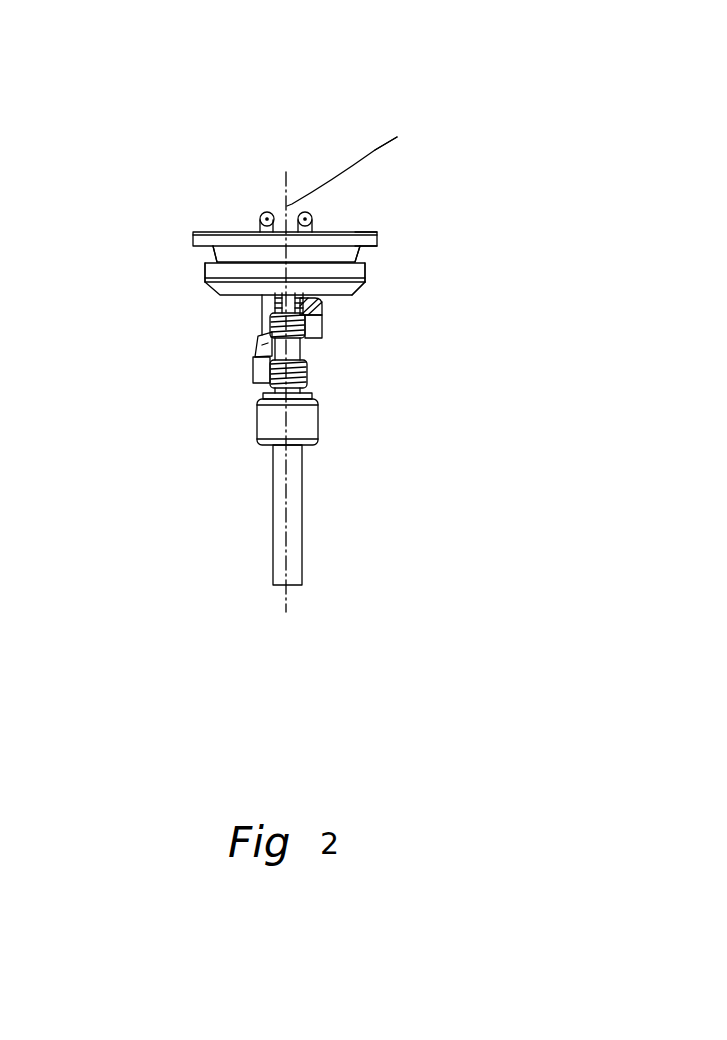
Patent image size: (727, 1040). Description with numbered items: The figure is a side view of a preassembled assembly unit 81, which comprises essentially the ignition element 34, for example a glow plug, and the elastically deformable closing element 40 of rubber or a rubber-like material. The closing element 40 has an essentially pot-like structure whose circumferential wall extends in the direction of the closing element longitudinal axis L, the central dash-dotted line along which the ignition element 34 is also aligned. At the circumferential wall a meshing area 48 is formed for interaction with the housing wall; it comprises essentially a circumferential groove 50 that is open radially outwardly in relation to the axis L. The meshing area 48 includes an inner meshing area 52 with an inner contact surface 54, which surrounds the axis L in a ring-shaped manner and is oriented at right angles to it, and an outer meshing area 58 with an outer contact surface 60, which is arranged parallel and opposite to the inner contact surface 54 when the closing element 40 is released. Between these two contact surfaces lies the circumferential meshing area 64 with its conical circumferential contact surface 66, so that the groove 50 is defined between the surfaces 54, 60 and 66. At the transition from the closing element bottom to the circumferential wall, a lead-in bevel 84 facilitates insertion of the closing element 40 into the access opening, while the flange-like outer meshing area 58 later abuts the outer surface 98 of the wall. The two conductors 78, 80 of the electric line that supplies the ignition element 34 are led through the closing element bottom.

The ignition element 34 is at (318, 432).
The closing element 40 is at (222, 230).
The meshing area 48 is at (165, 279).
The circumferential groove 50 is at (365, 258).
The inner meshing area 52 is at (221, 275).
The inner contact surface 54 is at (206, 263).
The outer meshing area 58 is at (190, 230).
The outer contact surface 60 is at (200, 252).
The circumferential meshing area 64 is at (377, 270).
The circumferential contact surface 66 is at (377, 247).
The conductor 78 is at (258, 226).
The conductor 80 is at (300, 212).
The preassembled assembly unit 81 is at (397, 126).
The lead-in bevel 84 is at (363, 291).
The outer surface 98 is at (373, 228).
The closing element longitudinal axis L is at (360, 367).